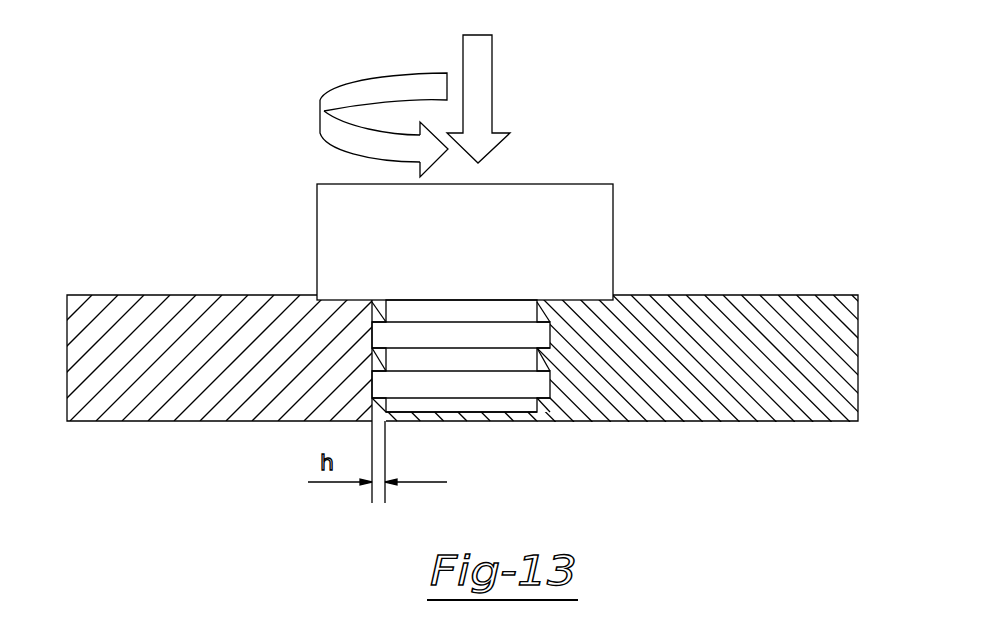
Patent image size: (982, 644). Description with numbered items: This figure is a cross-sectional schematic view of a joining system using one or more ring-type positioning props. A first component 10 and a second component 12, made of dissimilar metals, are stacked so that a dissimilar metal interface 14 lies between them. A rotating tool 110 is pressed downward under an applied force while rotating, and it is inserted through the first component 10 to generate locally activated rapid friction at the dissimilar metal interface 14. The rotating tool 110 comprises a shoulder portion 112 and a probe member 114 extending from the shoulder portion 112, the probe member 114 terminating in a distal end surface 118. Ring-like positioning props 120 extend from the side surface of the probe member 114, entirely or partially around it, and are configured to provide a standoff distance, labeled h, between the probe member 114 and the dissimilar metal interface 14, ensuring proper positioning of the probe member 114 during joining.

The first component 10 is at (168, 295).
The second component 12 is at (797, 295).
The dissimilar metal interface 14 is at (372, 363).
The rotating tool 110 is at (524, 267).
The shoulder portion 112 is at (613, 210).
The probe member 114 is at (520, 413).
The distal end surface 118 is at (465, 413).
The positioning prop 120 is at (550, 387).